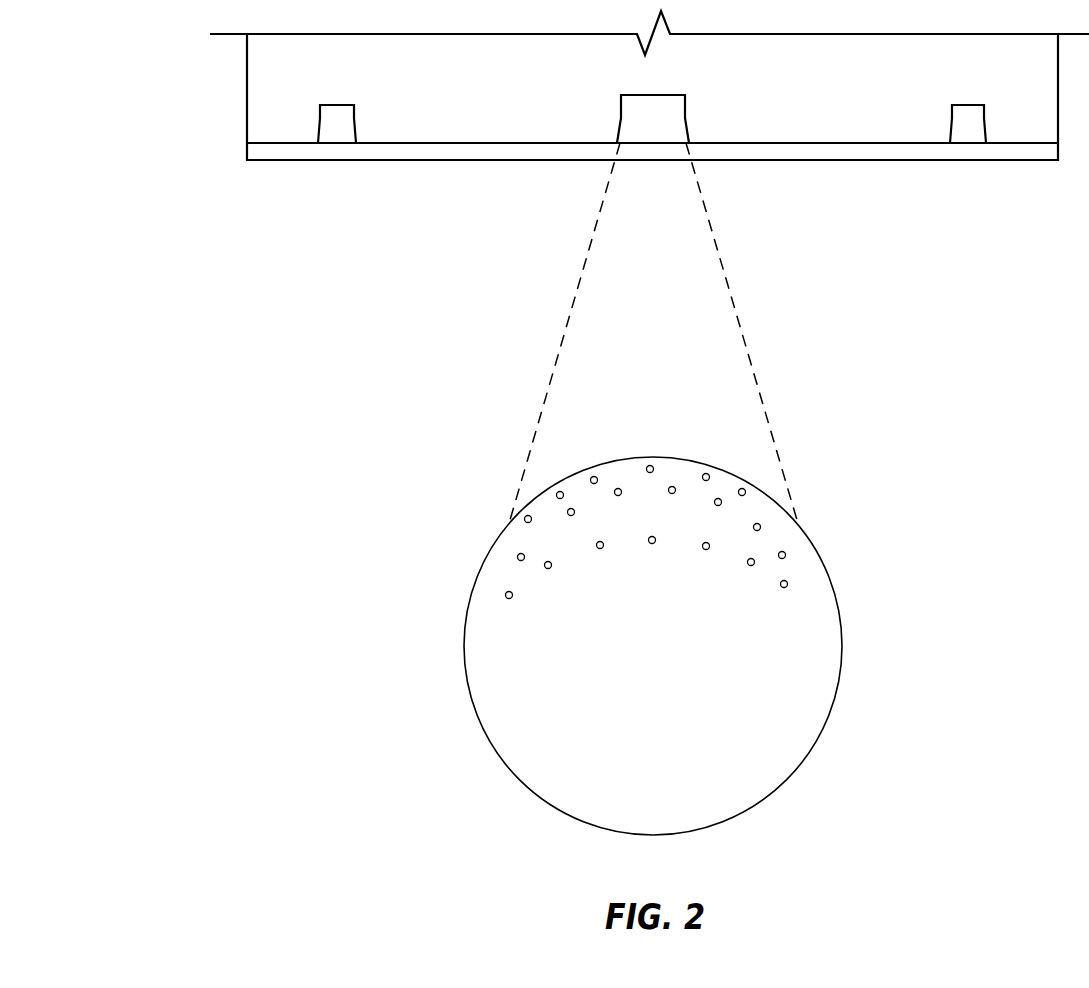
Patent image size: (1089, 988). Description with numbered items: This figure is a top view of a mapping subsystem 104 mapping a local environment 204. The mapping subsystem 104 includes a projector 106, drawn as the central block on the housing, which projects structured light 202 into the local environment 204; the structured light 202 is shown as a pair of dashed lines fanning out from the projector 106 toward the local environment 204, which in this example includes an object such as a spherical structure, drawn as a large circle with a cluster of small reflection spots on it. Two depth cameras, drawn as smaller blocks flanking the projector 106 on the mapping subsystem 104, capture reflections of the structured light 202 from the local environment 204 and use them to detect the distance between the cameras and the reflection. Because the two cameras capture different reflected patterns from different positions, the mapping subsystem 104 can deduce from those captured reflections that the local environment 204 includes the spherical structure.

The mapping subsystem 104 is at (247, 100).
The projector 106 is at (653, 143).
The structured light 202 is at (565, 343).
The local environment 204 is at (842, 632).